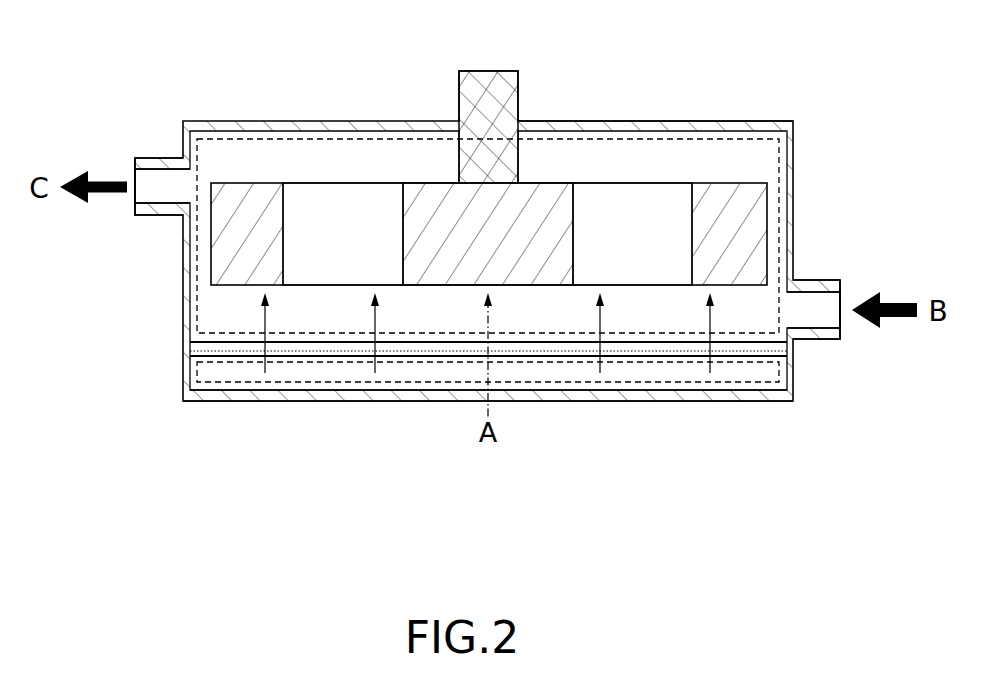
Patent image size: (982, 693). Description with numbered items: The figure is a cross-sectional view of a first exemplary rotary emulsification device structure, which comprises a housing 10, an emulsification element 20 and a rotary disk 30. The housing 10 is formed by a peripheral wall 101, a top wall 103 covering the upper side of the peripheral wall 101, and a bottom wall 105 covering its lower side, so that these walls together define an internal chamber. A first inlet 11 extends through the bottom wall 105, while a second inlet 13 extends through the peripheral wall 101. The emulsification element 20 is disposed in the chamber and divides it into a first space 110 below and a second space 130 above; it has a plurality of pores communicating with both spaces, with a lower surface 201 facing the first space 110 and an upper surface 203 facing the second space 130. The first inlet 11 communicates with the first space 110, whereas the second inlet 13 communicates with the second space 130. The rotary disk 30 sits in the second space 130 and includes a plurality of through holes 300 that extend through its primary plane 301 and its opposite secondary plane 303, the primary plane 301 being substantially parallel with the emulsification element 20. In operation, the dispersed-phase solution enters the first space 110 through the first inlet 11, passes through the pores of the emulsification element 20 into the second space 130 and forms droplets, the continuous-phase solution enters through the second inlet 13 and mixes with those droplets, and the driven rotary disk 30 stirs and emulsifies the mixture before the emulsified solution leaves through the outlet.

The housing 10 is at (615, 405).
The first inlet 11 is at (477, 395).
The second inlet 13 is at (829, 310).
The emulsification element 20 is at (442, 384).
The rotary disk 30 is at (263, 182).
The peripheral wall 101 is at (793, 188).
The top wall 103 is at (533, 126).
The bottom wall 105 is at (737, 396).
The first space 110 is at (788, 380).
The second space 130 is at (195, 258).
The lower surface 201 is at (342, 353).
The upper surface 203 is at (570, 340).
The through holes 300 is at (323, 205).
The primary plane 301 is at (558, 182).
The secondary plane 303 is at (430, 286).